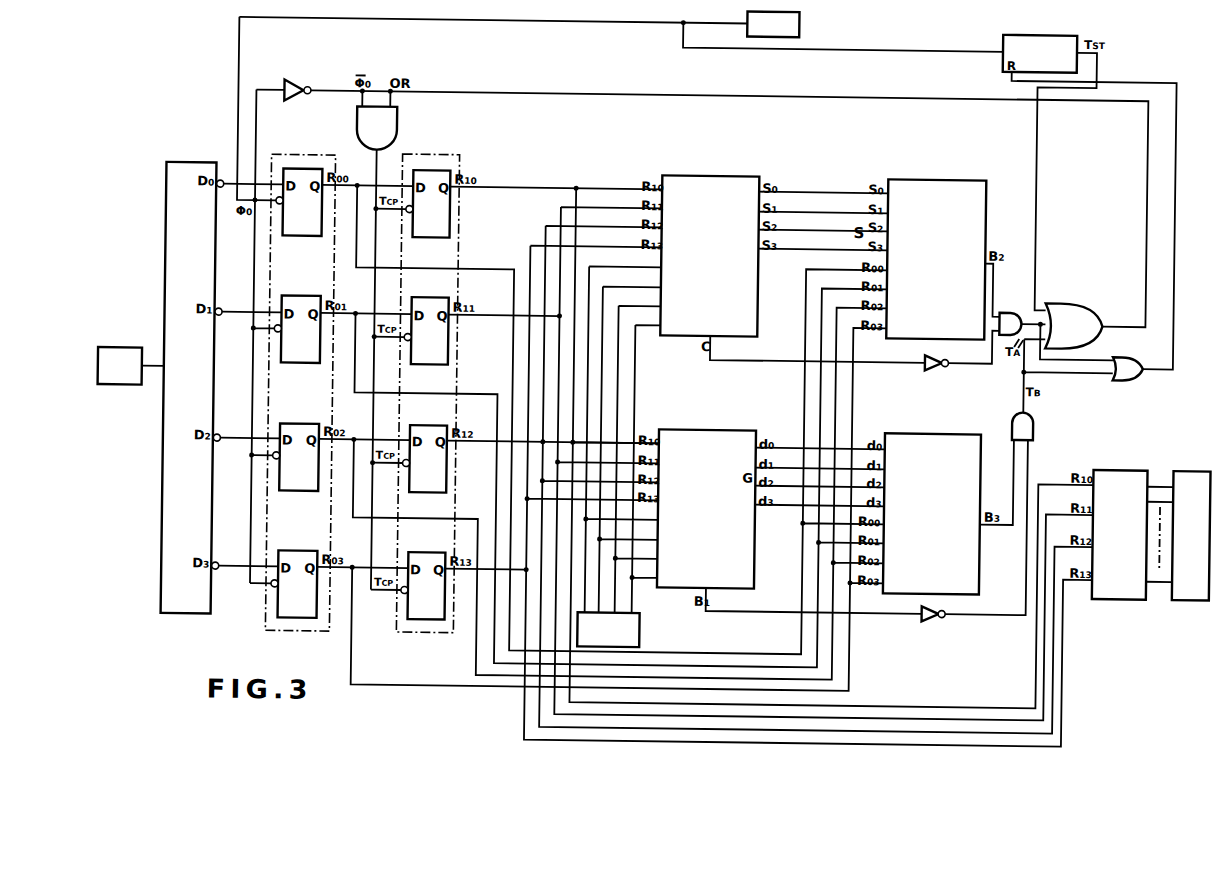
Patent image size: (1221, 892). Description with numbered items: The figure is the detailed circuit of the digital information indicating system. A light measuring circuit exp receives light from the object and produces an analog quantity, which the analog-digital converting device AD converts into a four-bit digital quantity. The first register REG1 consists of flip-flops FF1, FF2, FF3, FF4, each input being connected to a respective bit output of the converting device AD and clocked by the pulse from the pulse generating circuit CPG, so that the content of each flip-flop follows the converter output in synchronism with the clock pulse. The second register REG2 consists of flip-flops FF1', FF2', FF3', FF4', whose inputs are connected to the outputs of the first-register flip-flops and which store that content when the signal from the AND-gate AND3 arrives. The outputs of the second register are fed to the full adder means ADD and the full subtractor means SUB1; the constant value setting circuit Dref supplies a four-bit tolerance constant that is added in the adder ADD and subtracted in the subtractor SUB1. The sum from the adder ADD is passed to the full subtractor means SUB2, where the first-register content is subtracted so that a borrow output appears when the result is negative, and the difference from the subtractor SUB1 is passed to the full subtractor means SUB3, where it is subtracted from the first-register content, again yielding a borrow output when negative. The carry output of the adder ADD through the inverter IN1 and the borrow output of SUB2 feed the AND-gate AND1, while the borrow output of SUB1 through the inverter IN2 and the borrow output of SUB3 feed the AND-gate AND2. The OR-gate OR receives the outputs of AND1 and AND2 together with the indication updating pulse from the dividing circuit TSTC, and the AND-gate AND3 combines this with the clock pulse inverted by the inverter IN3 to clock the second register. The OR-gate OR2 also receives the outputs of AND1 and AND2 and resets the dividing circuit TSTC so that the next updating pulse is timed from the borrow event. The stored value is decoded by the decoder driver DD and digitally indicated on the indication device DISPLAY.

The light measuring circuit exp is at (120, 366).
The analog-digital converting device AD is at (189, 388).
The first register REG1 is at (300, 385).
The second register REG2 is at (427, 387).
The flip-flop FF1 is at (303, 202).
The flip-flop FF2 is at (301, 329).
The flip-flop FF3 is at (299, 457).
The flip-flop FF4 is at (298, 584).
The flip-flop FF1' is at (432, 203).
The flip-flop FF2' is at (430, 330).
The flip-flop FF3' is at (428, 458).
The flip-flop FF4' is at (427, 585).
The inverter IN1 is at (937, 369).
The inverter IN2 is at (933, 620).
The inverter IN3 is at (297, 80).
The AND-gate AND1 is at (1014, 317).
The AND gate AND2 is at (1042, 426).
The AND-gate AND3 is at (377, 128).
The OR-gate OR is at (1085, 326).
The OR-gate OR2 is at (1128, 361).
The pulse generating circuit CPG is at (773, 24).
The dividing circuit TSTC is at (1040, 54).
The full adder means ADD is at (709, 255).
The full subtractor means SUB1 is at (706, 508).
The full subtractor means SUB2 is at (936, 259).
The full subtractor means SUB3 is at (932, 513).
The constant value setting circuit Dref is at (608, 629).
The decoder driver DD is at (1120, 535).
The display DISPLAY is at (1191, 535).